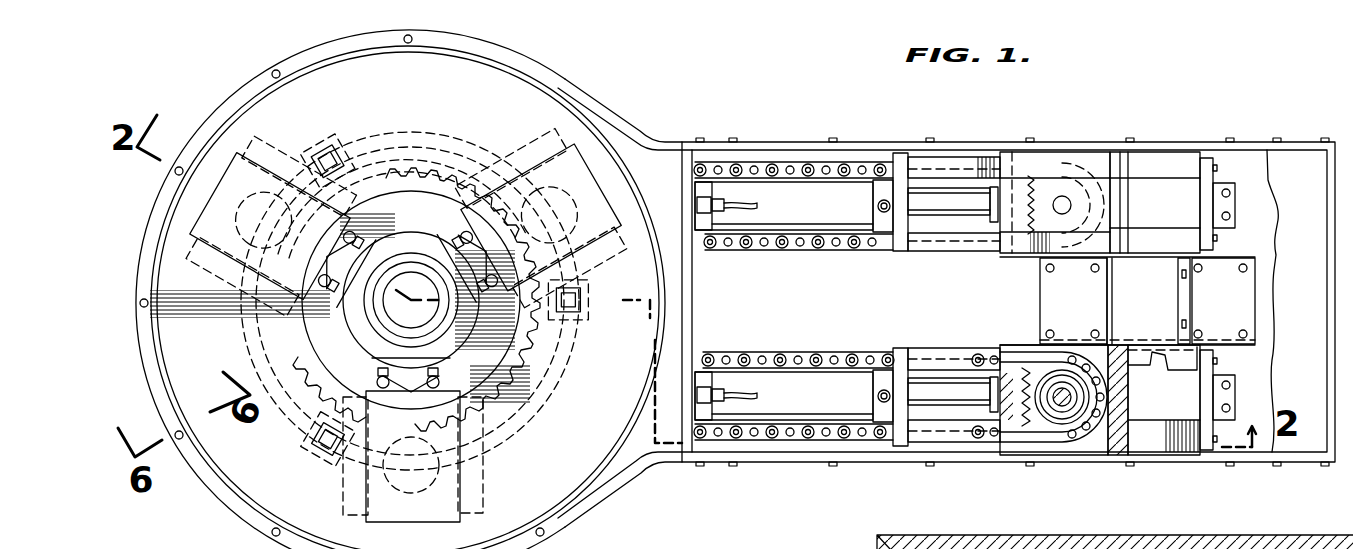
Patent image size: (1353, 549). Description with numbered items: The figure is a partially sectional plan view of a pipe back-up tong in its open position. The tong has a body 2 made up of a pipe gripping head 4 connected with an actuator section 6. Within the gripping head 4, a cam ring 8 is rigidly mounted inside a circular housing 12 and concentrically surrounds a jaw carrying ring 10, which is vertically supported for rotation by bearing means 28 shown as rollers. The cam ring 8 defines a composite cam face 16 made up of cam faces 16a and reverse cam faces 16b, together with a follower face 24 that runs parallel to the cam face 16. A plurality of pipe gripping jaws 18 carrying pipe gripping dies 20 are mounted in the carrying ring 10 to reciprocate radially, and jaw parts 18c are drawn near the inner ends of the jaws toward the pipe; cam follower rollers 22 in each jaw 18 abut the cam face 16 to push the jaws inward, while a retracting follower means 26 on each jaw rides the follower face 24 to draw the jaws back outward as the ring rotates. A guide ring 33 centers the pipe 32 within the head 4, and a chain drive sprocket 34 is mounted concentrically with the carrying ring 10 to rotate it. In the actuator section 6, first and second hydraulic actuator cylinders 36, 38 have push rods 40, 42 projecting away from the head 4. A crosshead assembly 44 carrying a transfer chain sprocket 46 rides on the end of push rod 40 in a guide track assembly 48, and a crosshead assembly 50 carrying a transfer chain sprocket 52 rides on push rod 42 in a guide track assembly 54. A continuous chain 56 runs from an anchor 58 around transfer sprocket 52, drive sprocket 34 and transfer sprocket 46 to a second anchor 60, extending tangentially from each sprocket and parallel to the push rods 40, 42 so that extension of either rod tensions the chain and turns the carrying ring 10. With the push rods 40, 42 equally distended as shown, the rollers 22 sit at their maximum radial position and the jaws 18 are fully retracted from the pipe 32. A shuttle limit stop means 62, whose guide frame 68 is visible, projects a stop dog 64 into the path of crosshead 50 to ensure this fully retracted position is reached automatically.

The body 2 is at (656, 138).
The pipe gripping head 4 is at (602, 89).
The actuator section 6 is at (955, 136).
The cam ring 8 is at (420, 127).
The jaw carrying ring 10 is at (190, 243).
The circular housing 12 is at (580, 512).
The cam face 16 is at (398, 140).
The cam faces 16a is at (296, 140).
The reverse cam faces 16b is at (470, 135).
The pipe gripping jaws 18 is at (258, 140).
The rail bracket 18c is at (452, 236).
The pipe gripping dies 20 is at (385, 238).
The cam follower rollers 22 is at (220, 268).
The follower face 24 is at (366, 130).
The retracting follower means 26 is at (228, 180).
The bearing means 28 is at (333, 130).
The pipe 32 is at (438, 262).
The guide ring 33 is at (418, 203).
The chain drive sprocket 34 is at (552, 395).
The first actuator cylinder 36 is at (840, 188).
The second actuator cylinder 38 is at (790, 410).
The push rod 40 is at (963, 220).
The push rod 42 is at (940, 388).
The crosshead assembly 44 is at (1018, 182).
The transfer chain sprocket 46 is at (1055, 188).
The guide track assembly 48 is at (1160, 162).
The crosshead assembly 50 is at (1022, 378).
The transfer chain sprocket 52 is at (1042, 420).
The guide track assembly 54 is at (1195, 362).
The chain 56 is at (762, 165).
The anchor 58 is at (700, 357).
The anchor 60 is at (700, 252).
The shuttle limit stop means 62 is at (1160, 314).
The stop dog 64 is at (1155, 368).
The guide frame 68 is at (1195, 296).